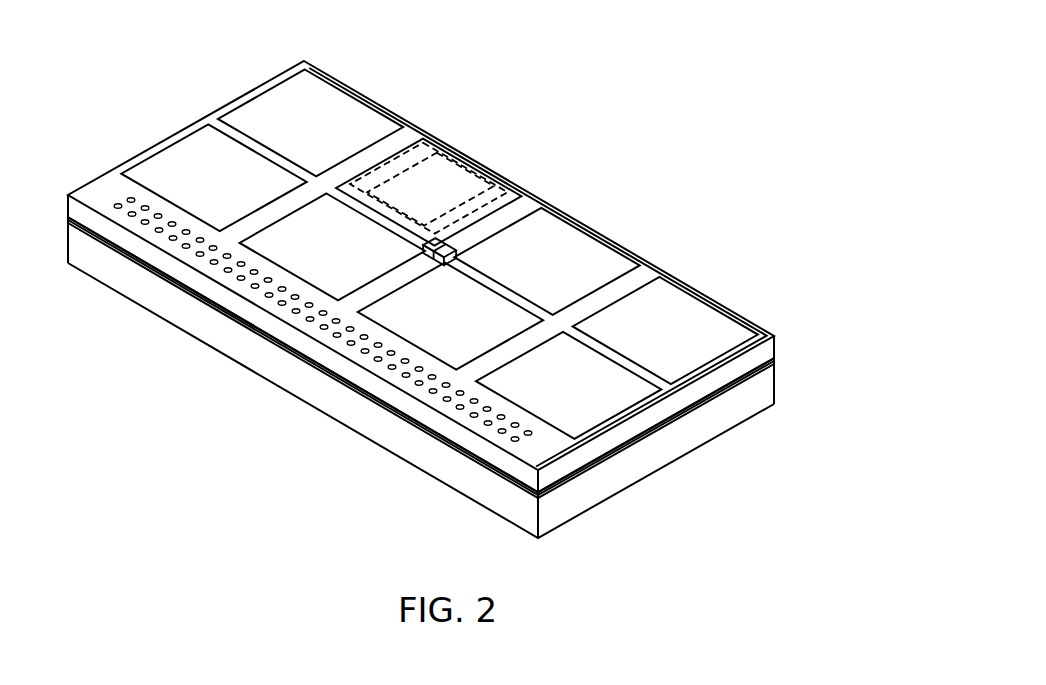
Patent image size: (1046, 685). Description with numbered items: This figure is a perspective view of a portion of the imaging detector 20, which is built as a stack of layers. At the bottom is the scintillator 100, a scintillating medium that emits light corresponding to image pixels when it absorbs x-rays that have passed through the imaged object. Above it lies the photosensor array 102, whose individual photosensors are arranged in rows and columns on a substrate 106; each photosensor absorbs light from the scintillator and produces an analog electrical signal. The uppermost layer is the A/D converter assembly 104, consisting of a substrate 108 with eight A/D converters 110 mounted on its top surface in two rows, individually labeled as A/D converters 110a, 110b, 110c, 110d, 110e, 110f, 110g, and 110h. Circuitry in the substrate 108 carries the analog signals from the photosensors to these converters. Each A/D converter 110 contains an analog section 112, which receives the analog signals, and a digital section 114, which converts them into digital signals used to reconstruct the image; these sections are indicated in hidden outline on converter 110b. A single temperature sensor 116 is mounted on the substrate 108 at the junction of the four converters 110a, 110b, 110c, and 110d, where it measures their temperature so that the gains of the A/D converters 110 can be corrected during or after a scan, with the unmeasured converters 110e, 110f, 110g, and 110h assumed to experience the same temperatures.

The detector 20 is at (465, 281).
The scintillator 100 is at (619, 478).
The photosensor array 102 is at (778, 358).
The A/D converter assembly 104 is at (762, 327).
The substrate 106 is at (512, 485).
The substrate 108 is at (115, 232).
The A/D converter 110 is at (439, 225).
The A/D converter 110a is at (354, 251).
The A/D converter 110b is at (464, 196).
The A/D converter 110c is at (461, 314).
The A/D converter 110d is at (567, 262).
The A/D converter 110e is at (589, 387).
The A/D converter 110f is at (682, 332).
The A/D converter 110g is at (236, 179).
The A/D converter 110h is at (331, 126).
The analog section 112 is at (422, 142).
The digital section 114 is at (498, 166).
The temperature sensor 116 is at (459, 240).